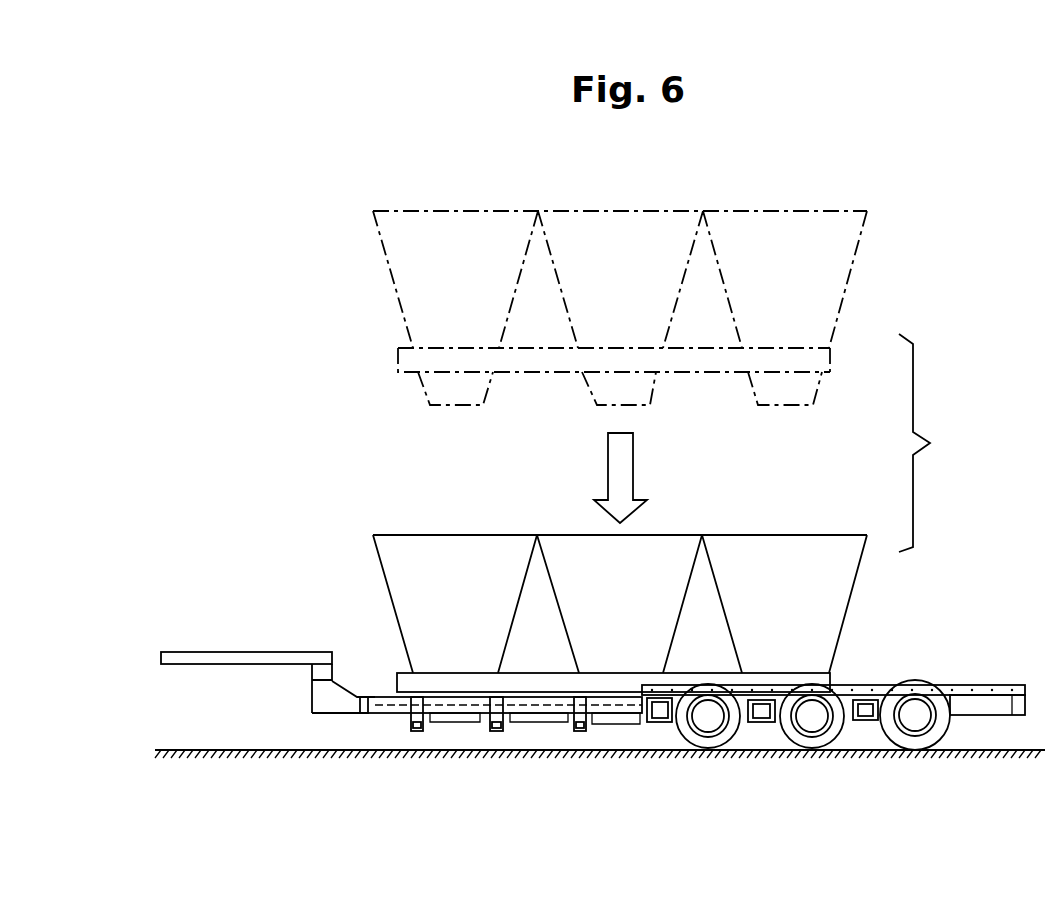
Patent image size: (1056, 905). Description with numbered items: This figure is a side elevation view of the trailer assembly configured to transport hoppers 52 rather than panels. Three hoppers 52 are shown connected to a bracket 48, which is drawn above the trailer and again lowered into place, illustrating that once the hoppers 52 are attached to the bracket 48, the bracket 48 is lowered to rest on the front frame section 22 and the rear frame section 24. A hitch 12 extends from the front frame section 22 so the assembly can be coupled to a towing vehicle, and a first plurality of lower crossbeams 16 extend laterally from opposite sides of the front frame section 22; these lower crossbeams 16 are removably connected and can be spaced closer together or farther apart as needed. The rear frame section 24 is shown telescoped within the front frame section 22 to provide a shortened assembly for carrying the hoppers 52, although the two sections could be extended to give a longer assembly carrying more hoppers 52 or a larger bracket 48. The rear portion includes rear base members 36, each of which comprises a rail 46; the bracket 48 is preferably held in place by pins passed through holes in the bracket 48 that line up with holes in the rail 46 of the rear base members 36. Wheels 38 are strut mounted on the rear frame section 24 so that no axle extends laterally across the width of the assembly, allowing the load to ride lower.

The hitch 12 is at (243, 652).
The lower crossbeams 16 is at (580, 733).
The front frame section 22 is at (369, 715).
The rear frame section 24 is at (390, 715).
The rear base members 36 is at (990, 708).
The wheels 38 is at (887, 745).
The rail 46 is at (957, 688).
The bracket 48 is at (395, 360).
The hoppers 52 is at (474, 211).